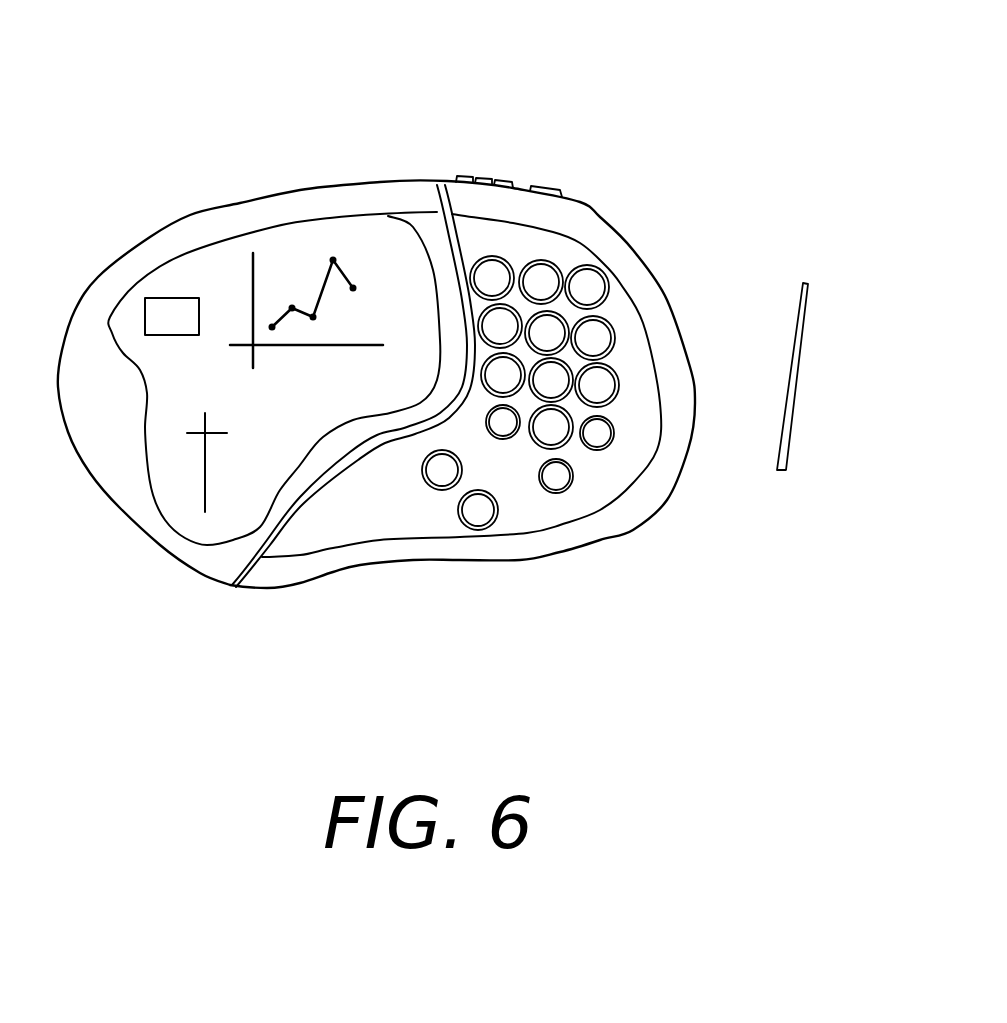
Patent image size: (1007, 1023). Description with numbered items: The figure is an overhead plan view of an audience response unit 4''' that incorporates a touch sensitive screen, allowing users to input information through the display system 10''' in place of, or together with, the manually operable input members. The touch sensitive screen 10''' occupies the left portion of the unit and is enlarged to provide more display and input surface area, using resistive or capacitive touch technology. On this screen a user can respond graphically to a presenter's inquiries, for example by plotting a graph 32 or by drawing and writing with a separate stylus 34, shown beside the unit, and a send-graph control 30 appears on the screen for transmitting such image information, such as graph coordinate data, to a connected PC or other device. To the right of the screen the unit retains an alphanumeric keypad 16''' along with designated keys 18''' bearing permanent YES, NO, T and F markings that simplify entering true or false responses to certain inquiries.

The touch sensitive screen 10''' is at (354, 320).
The audience response unit 4''' is at (583, 113).
The alphanumeric keypad 16''' is at (611, 326).
The designated keys 18''' is at (534, 541).
The send graph button 30 is at (192, 298).
The graph 32 is at (278, 262).
The stylus 34 is at (797, 382).